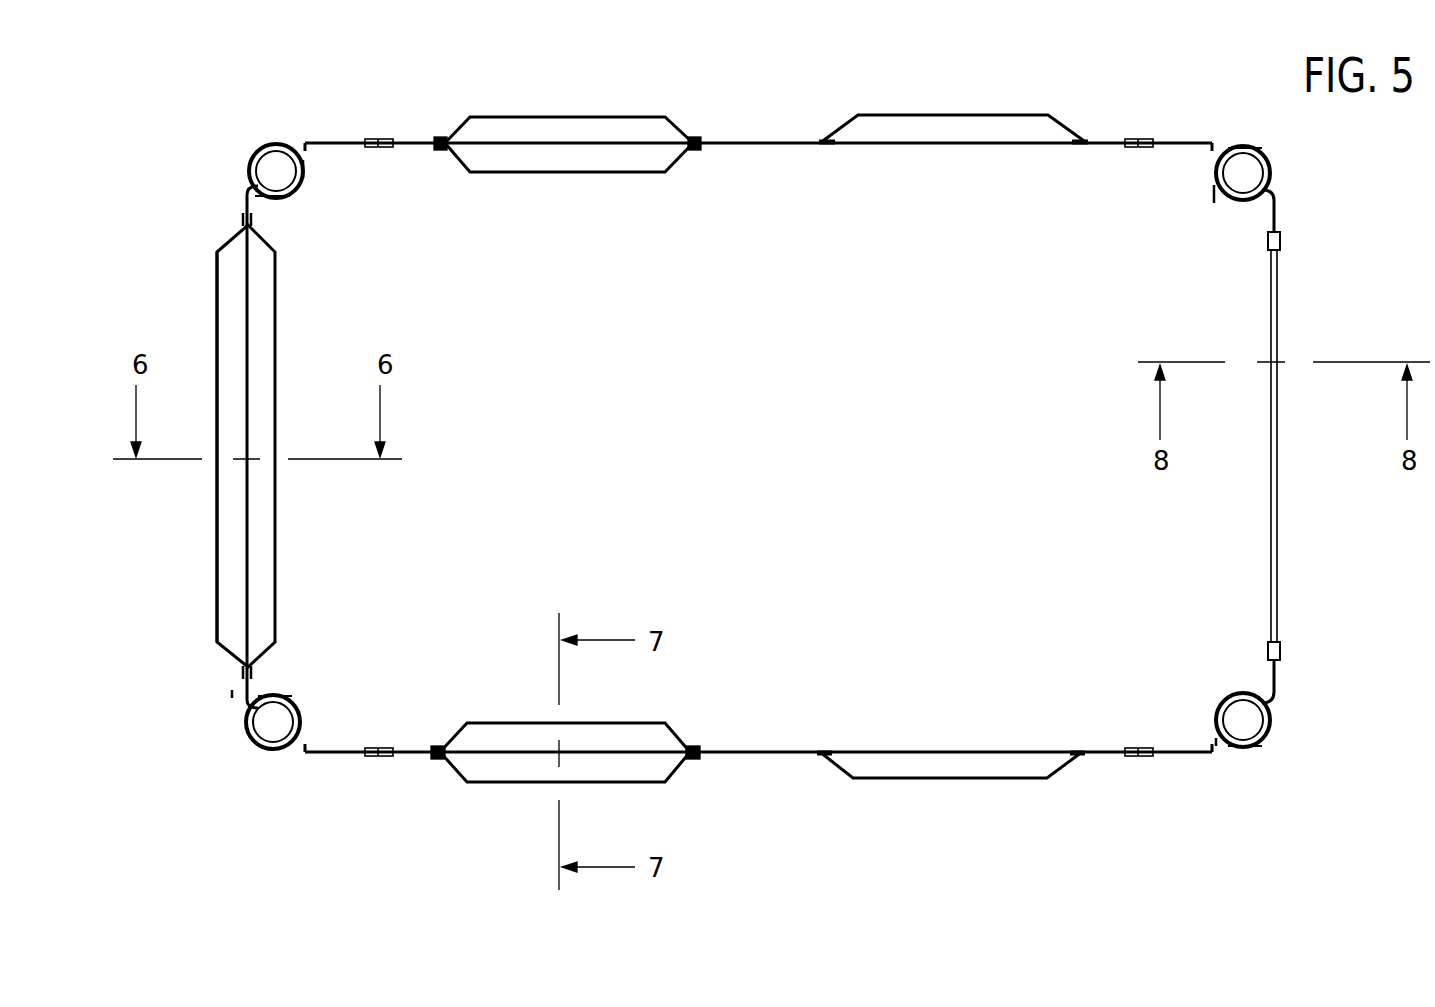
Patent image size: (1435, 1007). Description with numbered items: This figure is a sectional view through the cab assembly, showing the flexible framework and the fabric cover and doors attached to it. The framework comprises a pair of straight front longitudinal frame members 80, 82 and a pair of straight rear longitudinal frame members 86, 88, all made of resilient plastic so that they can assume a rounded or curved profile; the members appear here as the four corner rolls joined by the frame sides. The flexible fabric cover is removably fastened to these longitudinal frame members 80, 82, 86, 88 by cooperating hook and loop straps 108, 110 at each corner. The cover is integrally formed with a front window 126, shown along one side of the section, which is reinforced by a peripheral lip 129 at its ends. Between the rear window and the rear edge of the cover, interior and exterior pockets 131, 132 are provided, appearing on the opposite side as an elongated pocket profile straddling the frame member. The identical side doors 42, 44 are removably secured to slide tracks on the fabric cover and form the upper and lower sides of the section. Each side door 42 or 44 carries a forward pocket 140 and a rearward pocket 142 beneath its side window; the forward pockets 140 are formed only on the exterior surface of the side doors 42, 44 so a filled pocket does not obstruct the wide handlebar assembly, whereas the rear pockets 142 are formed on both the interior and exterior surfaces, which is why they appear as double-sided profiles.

The side door 42 is at (755, 749).
The side door 44 is at (752, 147).
The front longitudinal frame member 80 is at (1252, 736).
The front longitudinal frame member 82 is at (1243, 155).
The rear longitudinal frame member 86 is at (260, 738).
The rear longitudinal frame member 88 is at (268, 152).
The hook and loop strap 108 is at (305, 167).
The hook and loop strap 110 is at (290, 198).
The front window 126 is at (1278, 450).
The peripheral lip 129 is at (1282, 240).
The interior pocket 131 is at (277, 352).
The exterior pocket 132 is at (217, 330).
The forward pocket 140 is at (945, 115).
The rearward pocket 142 is at (562, 117).